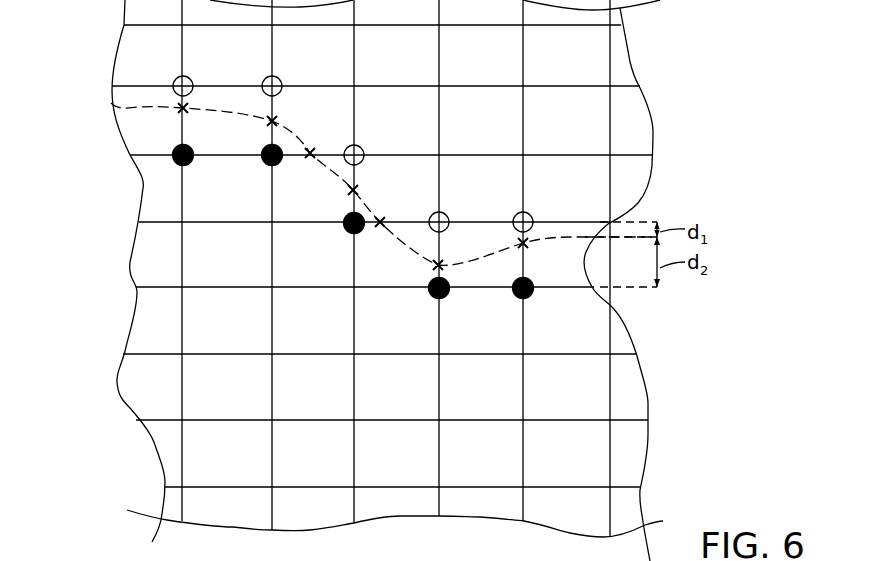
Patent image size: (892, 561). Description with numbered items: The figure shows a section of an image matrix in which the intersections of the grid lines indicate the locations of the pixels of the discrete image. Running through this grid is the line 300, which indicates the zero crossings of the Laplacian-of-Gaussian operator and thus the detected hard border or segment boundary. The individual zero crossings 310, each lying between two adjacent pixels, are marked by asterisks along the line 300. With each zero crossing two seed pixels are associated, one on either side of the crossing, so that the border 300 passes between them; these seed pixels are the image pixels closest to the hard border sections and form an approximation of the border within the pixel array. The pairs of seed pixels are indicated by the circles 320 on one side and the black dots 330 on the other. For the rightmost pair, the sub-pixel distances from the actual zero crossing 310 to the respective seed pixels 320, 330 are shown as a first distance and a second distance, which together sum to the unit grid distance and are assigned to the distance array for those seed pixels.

The line indicating zero crossings (segment boundary / hard border) 300 is at (140, 108).
The zero crossings (asterisks) 310 is at (187, 106).
The seed pixels (circles) 320 is at (177, 78).
The seed pixels (black dots) 330 is at (192, 163).